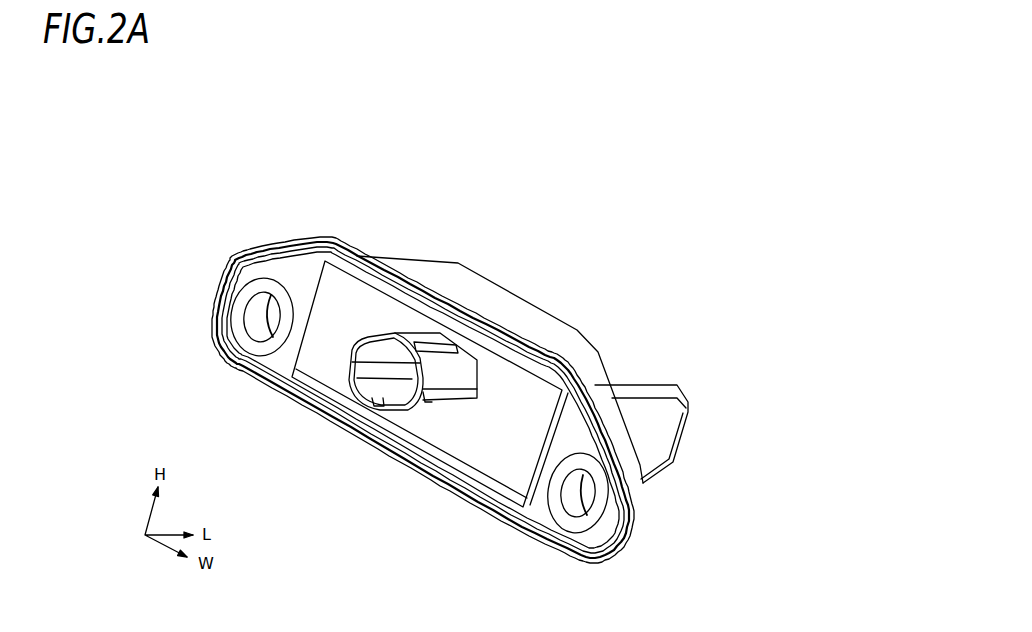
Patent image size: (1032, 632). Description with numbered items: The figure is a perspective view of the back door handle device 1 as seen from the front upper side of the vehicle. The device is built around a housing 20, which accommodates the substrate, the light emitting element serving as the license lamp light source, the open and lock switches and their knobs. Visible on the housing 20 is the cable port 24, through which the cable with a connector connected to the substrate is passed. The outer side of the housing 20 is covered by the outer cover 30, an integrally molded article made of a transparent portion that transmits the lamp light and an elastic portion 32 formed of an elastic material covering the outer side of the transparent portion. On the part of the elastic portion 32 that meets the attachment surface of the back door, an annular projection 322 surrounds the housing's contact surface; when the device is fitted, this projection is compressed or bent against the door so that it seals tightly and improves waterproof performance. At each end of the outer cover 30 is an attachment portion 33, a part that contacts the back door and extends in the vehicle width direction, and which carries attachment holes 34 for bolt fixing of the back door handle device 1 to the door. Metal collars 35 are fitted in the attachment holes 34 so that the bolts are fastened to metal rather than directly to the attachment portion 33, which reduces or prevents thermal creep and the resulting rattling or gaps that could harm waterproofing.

The back door handle device 1 is at (592, 240).
The housing 20 is at (340, 388).
The cable port 24 is at (380, 333).
The outer cover 30 is at (575, 427).
The elastic portion 32 is at (536, 383).
The annular projection 322 is at (247, 247).
The attachment portion 33 is at (590, 537).
The attachment holes 34 is at (587, 495).
The metal collars 35 is at (598, 512).